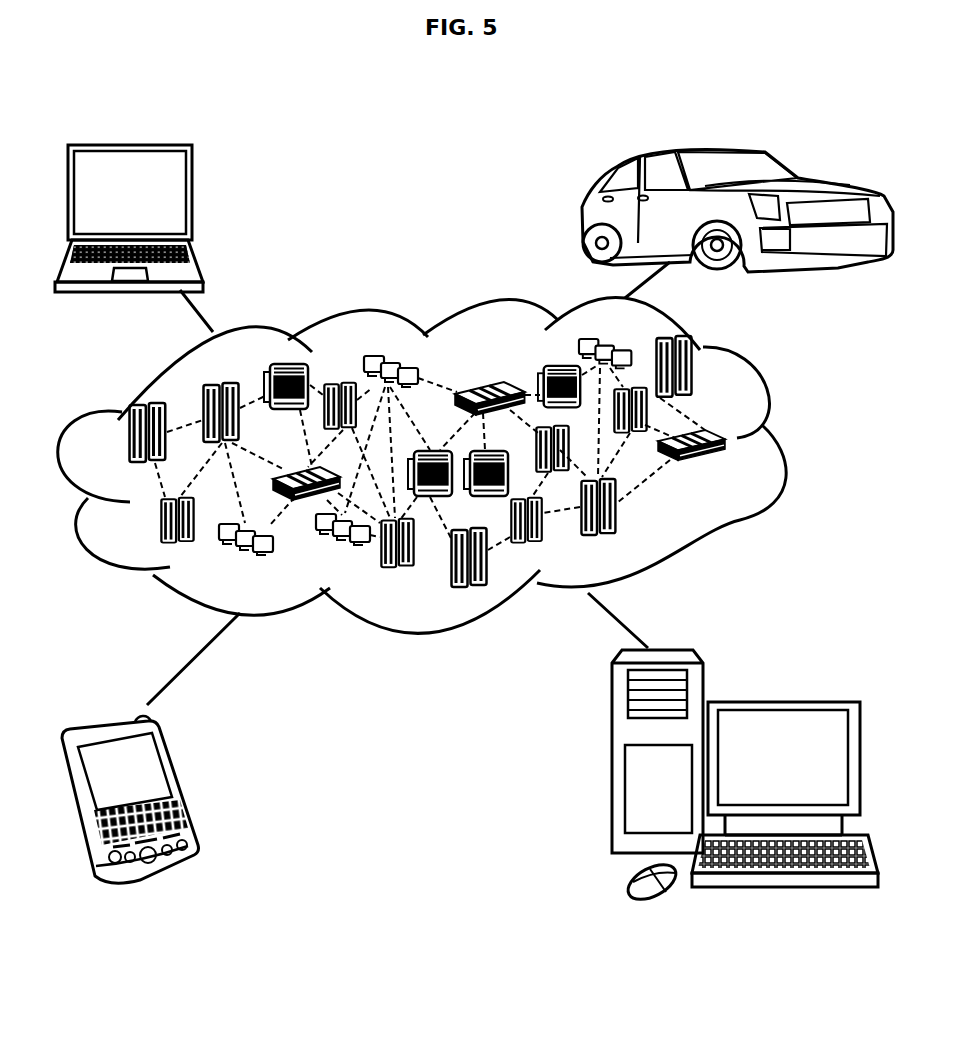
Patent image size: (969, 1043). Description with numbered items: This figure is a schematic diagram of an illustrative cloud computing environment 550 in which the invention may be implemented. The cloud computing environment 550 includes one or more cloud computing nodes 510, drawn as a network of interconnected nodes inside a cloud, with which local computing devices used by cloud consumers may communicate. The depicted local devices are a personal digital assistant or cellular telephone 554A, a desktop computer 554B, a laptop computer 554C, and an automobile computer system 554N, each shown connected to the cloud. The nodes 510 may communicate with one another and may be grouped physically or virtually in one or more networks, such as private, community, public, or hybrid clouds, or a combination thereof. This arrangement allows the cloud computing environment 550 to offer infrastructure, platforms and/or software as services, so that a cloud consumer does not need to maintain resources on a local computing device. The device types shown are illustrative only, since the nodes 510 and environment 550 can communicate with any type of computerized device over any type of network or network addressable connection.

The cloud computing environment 550 is at (782, 443).
The cloud computing nodes 510 is at (734, 471).
The personal digital assistant (PDA) or cellular telephone 554A is at (183, 788).
The desktop computer 554B is at (782, 703).
The laptop computer 554C is at (192, 201).
The automobile computer system 554N is at (585, 210).